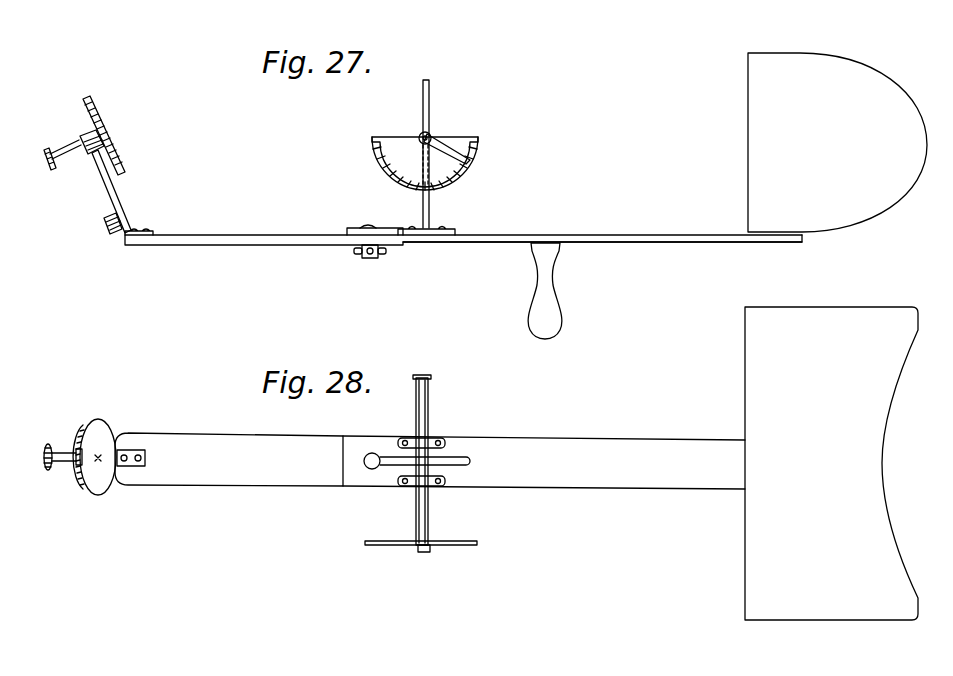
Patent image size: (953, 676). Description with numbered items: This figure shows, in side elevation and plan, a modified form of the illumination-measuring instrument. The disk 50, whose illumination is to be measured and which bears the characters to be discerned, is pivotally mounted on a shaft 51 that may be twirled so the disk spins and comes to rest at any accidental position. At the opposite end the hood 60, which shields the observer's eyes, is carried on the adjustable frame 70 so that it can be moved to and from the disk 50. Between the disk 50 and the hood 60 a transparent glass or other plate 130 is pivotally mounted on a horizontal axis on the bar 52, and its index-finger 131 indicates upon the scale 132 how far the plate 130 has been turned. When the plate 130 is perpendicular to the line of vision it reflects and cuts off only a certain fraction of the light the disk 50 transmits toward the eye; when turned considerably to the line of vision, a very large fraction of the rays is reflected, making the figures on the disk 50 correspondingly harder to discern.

In FIG. 27, the disk 50 is at (115, 145).
In FIG. 28, the disk 50 is at (118, 440).
In FIG. 27, the shaft 51 is at (72, 158).
In FIG. 28, the shaft 51 is at (66, 462).
In FIG. 27, the bar 52 is at (463, 252).
In FIG. 28, the bar 52 is at (229, 459).
In FIG. 27, the hood 60 is at (837, 142).
In FIG. 28, the hood 60 is at (831, 463).
In FIG. 27, the adjustable frame 70 is at (663, 243).
In FIG. 28, the adjustable frame 70 is at (544, 462).
In FIG. 27, the transparent plate 130 is at (430, 122).
In FIG. 28, the transparent plate 130 is at (430, 432).
In FIG. 27, the index-finger 131 is at (458, 156).
In FIG. 27, the scale 132 is at (445, 185).